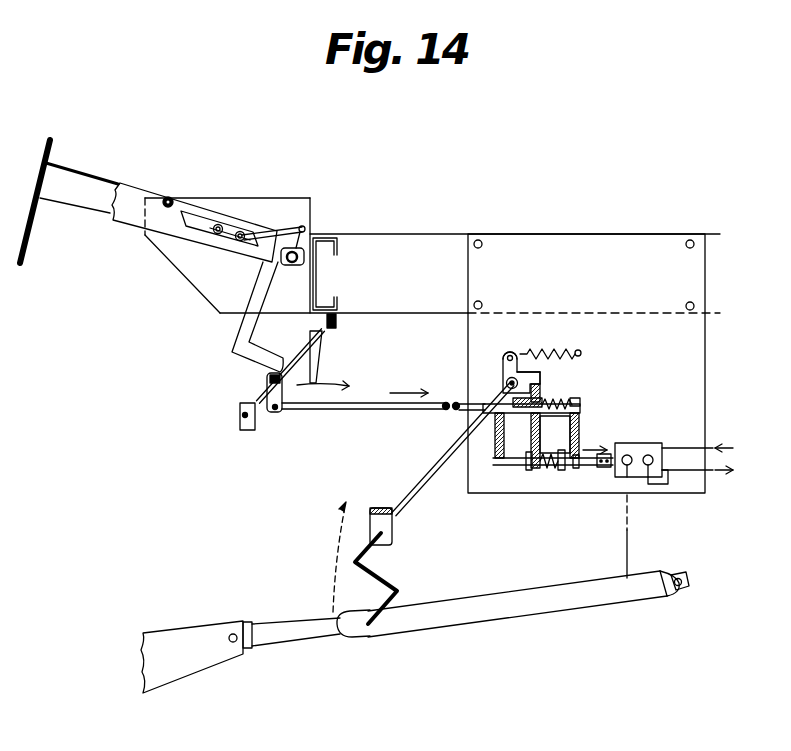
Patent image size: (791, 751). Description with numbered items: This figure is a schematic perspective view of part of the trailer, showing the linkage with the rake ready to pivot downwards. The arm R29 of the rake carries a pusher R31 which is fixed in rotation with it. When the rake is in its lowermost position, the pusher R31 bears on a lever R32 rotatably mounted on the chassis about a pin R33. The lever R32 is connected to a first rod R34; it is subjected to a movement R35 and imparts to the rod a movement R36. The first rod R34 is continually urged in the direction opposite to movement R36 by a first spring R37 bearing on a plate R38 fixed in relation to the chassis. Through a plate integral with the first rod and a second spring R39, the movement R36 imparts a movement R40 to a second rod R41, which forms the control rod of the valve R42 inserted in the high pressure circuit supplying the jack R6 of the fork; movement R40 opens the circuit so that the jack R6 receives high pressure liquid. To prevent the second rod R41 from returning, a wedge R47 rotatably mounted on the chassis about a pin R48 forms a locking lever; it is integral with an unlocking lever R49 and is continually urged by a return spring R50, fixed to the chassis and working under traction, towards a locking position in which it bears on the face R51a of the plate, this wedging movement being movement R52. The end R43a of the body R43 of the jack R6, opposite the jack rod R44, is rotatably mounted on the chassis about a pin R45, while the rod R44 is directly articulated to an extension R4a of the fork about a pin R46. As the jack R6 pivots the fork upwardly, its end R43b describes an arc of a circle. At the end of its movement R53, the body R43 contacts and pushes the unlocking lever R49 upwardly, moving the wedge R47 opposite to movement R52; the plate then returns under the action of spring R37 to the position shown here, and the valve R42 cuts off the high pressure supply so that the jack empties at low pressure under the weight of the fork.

The arm R29 is at (131, 197).
The pusher R31 is at (243, 362).
The lever R32 is at (322, 360).
The pin R33 is at (327, 322).
The first rod R34 is at (336, 410).
The movement R35 is at (326, 392).
The movement R36 is at (414, 379).
The first spring R37 is at (552, 402).
The plate R38 is at (580, 431).
The second spring R39 is at (534, 470).
The movement R40 is at (598, 466).
The second rod R41 is at (578, 470).
The valve R42 is at (637, 447).
The body R43 is at (517, 617).
The end R43a is at (658, 598).
The end R43b is at (350, 638).
The rod R44 is at (294, 636).
The pin R45 is at (684, 574).
The pin R46 is at (232, 634).
The wedge R47 is at (538, 376).
The pin R48 is at (503, 384).
The unlocking lever R49 is at (399, 591).
The return spring R50 is at (551, 351).
The face R51a is at (545, 389).
The movement R52 is at (513, 344).
The movement R53 is at (311, 557).
The extension R4a is at (197, 637).
The jack R6 is at (503, 621).